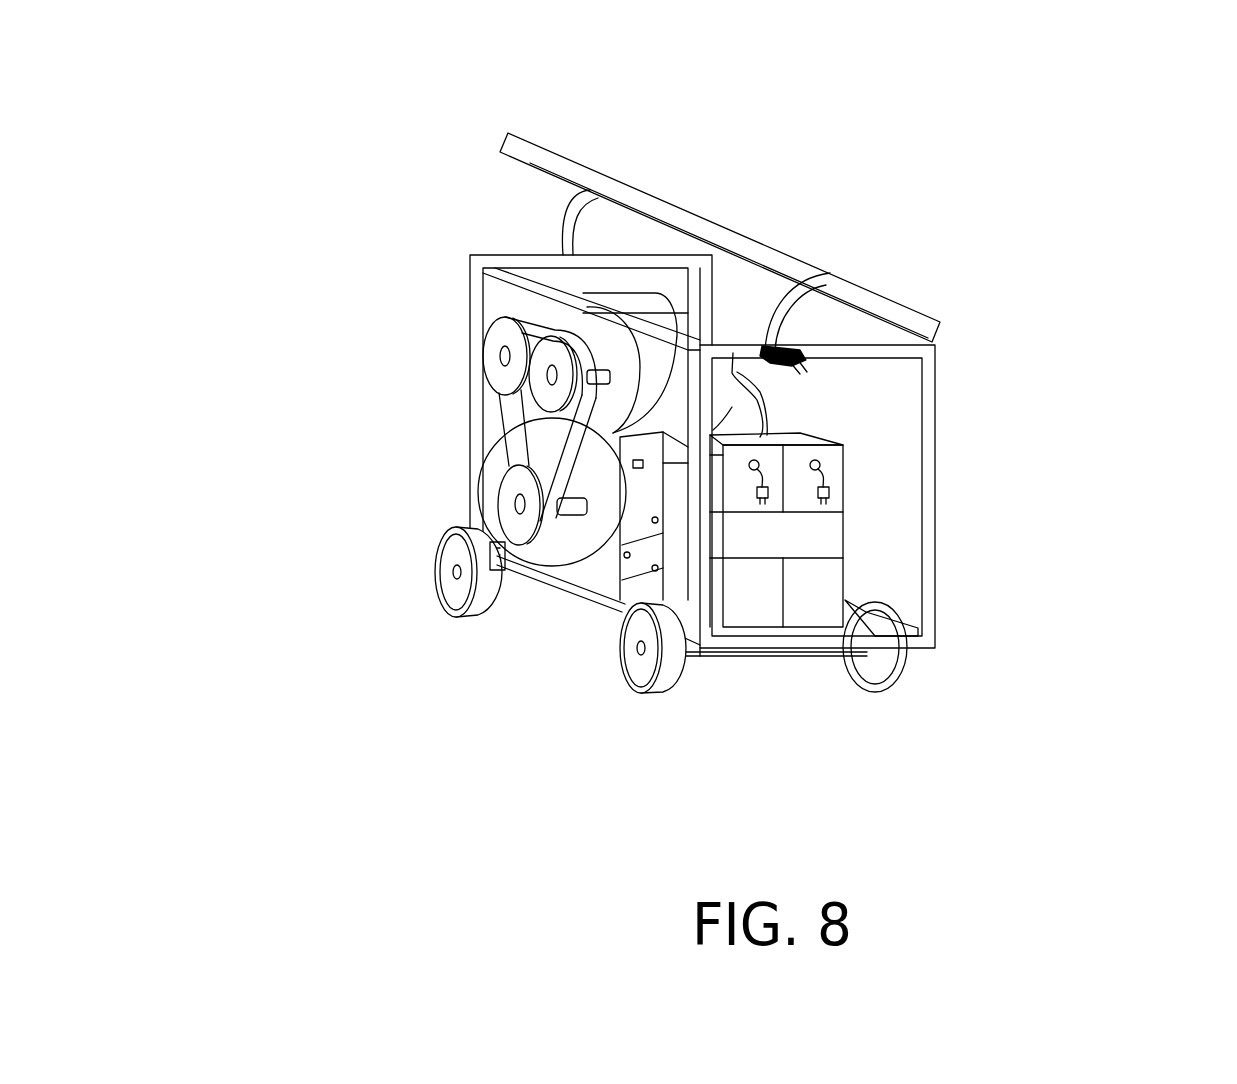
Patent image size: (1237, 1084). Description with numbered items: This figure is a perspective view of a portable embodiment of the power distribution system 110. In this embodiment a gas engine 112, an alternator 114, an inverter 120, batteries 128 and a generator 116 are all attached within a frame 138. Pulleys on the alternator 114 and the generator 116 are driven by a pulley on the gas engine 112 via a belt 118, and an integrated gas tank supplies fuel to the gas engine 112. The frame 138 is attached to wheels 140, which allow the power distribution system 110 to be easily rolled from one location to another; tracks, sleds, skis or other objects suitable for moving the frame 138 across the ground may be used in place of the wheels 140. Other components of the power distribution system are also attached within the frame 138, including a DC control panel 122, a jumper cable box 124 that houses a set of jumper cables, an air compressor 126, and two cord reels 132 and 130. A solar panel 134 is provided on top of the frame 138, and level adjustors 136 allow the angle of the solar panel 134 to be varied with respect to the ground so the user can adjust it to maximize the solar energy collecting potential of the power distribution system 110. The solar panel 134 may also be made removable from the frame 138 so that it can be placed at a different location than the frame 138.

The power distribution system 110 is at (428, 174).
The gas engine 112 is at (548, 449).
The alternator 114 is at (650, 390).
The generator 116 is at (535, 327).
The belt 118 is at (508, 418).
The inverter 120 is at (630, 578).
The DC control panel 122 is at (633, 560).
The jumper cable box 124 is at (500, 580).
The air compressor 126 is at (828, 538).
The batteries 128 is at (768, 600).
The cord reel 130 is at (830, 447).
The cord reel 132 is at (768, 448).
The solar panel 134 is at (738, 237).
The level adjustors 136 is at (830, 275).
The frame 138 is at (920, 462).
The wheels 140 is at (680, 690).